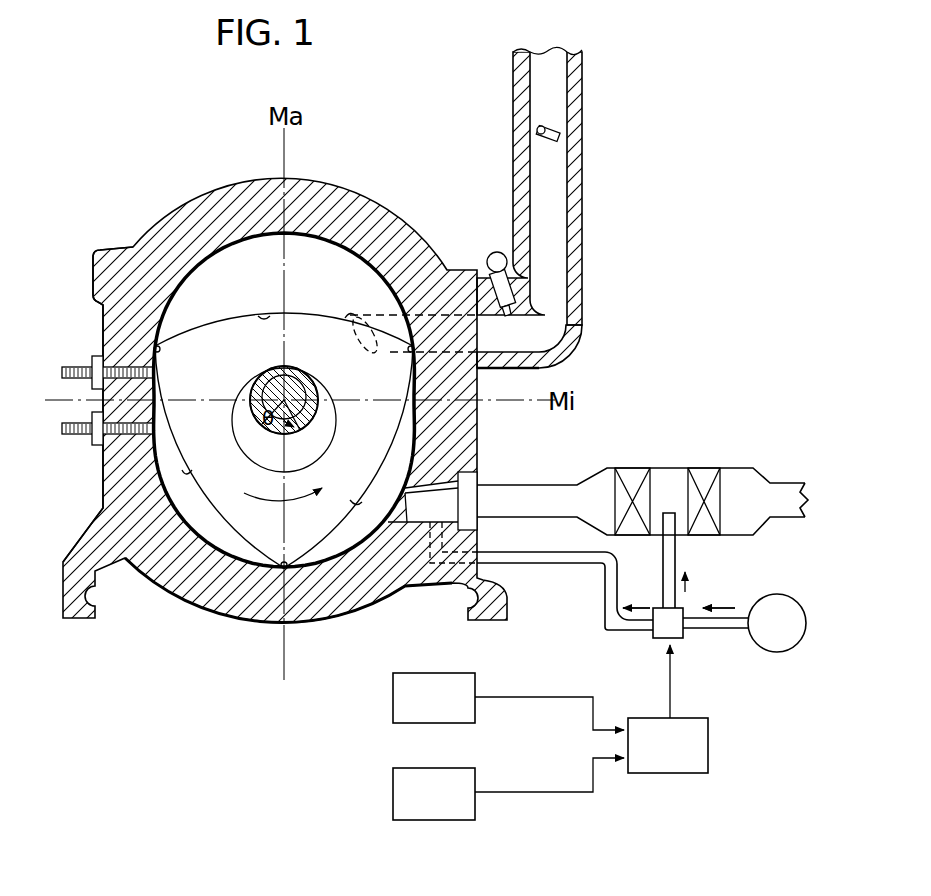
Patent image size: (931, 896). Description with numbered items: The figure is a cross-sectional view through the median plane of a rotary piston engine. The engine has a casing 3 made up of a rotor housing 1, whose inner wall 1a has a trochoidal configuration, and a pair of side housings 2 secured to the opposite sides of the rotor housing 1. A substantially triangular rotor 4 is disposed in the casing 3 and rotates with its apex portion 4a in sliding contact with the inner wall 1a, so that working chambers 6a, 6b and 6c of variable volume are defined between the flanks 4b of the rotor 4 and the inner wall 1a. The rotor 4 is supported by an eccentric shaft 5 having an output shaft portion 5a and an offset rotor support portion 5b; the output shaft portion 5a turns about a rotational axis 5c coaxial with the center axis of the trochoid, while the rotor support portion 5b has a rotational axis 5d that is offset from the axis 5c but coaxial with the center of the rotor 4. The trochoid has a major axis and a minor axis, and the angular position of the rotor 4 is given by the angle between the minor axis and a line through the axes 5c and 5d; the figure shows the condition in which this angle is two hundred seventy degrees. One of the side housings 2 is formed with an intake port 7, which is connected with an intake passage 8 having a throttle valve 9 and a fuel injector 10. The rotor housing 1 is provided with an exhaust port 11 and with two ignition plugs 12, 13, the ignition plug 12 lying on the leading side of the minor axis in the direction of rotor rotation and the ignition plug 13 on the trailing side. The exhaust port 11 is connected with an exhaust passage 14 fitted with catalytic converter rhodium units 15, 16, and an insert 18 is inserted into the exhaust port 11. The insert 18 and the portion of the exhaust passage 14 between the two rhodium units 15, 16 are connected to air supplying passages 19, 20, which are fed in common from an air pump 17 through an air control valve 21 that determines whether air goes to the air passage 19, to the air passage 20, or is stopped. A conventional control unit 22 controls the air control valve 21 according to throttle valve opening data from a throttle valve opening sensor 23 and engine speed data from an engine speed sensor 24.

The rotor housing 1 is at (178, 247).
The inner wall 1a is at (345, 240).
The side housings 2 is at (238, 250).
The casing 3 is at (121, 140).
The rotor 4 is at (237, 343).
The apex portion 4a is at (168, 343).
The flanks 4b is at (264, 314).
The eccentric shaft 5 is at (334, 387).
The output shaft portion 5a is at (260, 387).
The rotor support portion 5b is at (313, 447).
The rotational axis 5c is at (306, 379).
The rotational axis 5d is at (290, 417).
The working chamber 6a is at (326, 291).
The working chamber 6b is at (187, 497).
The working chamber 6c is at (393, 470).
The intake port 7 is at (355, 316).
The intake passage 8 is at (577, 203).
The throttle valve 9 is at (557, 130).
The fuel injector 10 is at (494, 253).
The exhaust port 11 is at (400, 520).
The ignition plug 12 is at (62, 432).
The ignition plug 13 is at (62, 373).
The exhaust passage 14 is at (548, 483).
The rhodium unit 15 is at (632, 477).
The rhodium unit 16 is at (707, 477).
The air pump 17 is at (762, 652).
The insert 18 is at (467, 497).
The air supplying passage 19 is at (548, 562).
The air supplying passage 20 is at (677, 552).
The air control valve 21 is at (676, 632).
The control unit 22 is at (680, 760).
The throttle valve opening sensor 23 is at (447, 685).
The engine speed sensor 24 is at (443, 805).